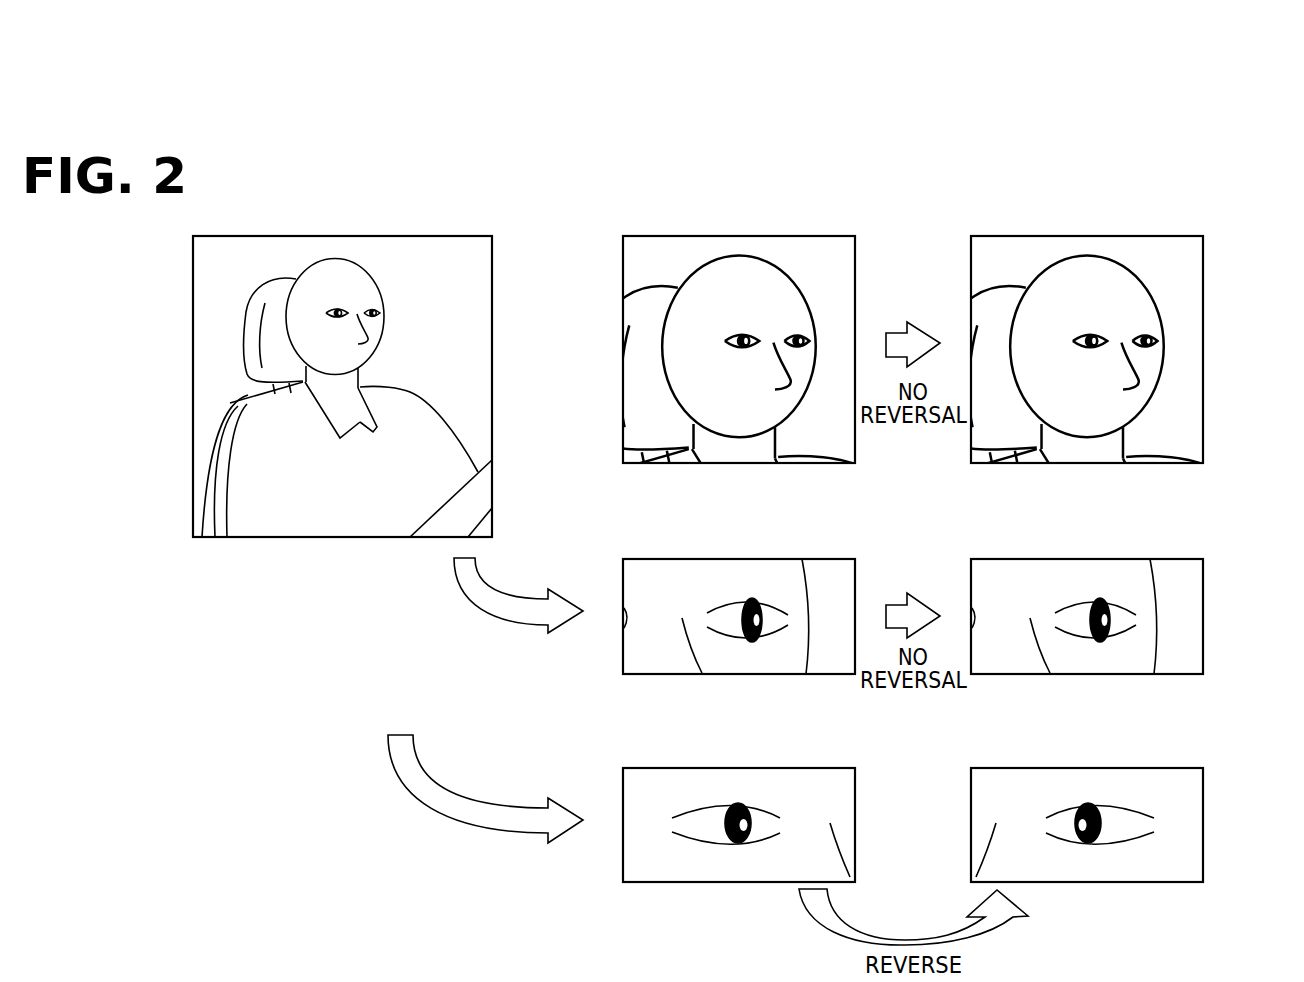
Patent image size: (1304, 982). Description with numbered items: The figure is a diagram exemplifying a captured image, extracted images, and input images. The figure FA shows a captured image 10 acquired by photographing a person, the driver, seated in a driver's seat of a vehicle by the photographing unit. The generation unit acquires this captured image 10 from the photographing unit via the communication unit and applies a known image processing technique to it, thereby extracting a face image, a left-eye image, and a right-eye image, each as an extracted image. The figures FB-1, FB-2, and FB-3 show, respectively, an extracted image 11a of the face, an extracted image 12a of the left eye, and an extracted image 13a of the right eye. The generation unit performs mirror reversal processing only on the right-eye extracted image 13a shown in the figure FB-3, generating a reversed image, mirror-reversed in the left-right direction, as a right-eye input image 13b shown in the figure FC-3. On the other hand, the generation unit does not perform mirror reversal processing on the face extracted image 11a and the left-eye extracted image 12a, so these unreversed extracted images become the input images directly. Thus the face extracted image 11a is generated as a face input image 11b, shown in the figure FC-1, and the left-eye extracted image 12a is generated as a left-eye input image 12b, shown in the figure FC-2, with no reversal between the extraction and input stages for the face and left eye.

The captured image 10 is at (492, 283).
The face extracted image 11a is at (855, 278).
The face input image 11b is at (1203, 282).
The left-eye extracted image 12a is at (855, 585).
The left-eye input image 12b is at (1203, 589).
The right-eye extracted image 13a is at (855, 800).
The right-eye input image 13b is at (1203, 803).
The figure FA is at (491, 189).
The figure FB-1 is at (869, 190).
The figure FC-1 is at (1193, 190).
The figure FB-2 is at (869, 520).
The figure FC-2 is at (1193, 520).
The figure FB-3 is at (869, 748).
The figure FC-3 is at (1193, 728).